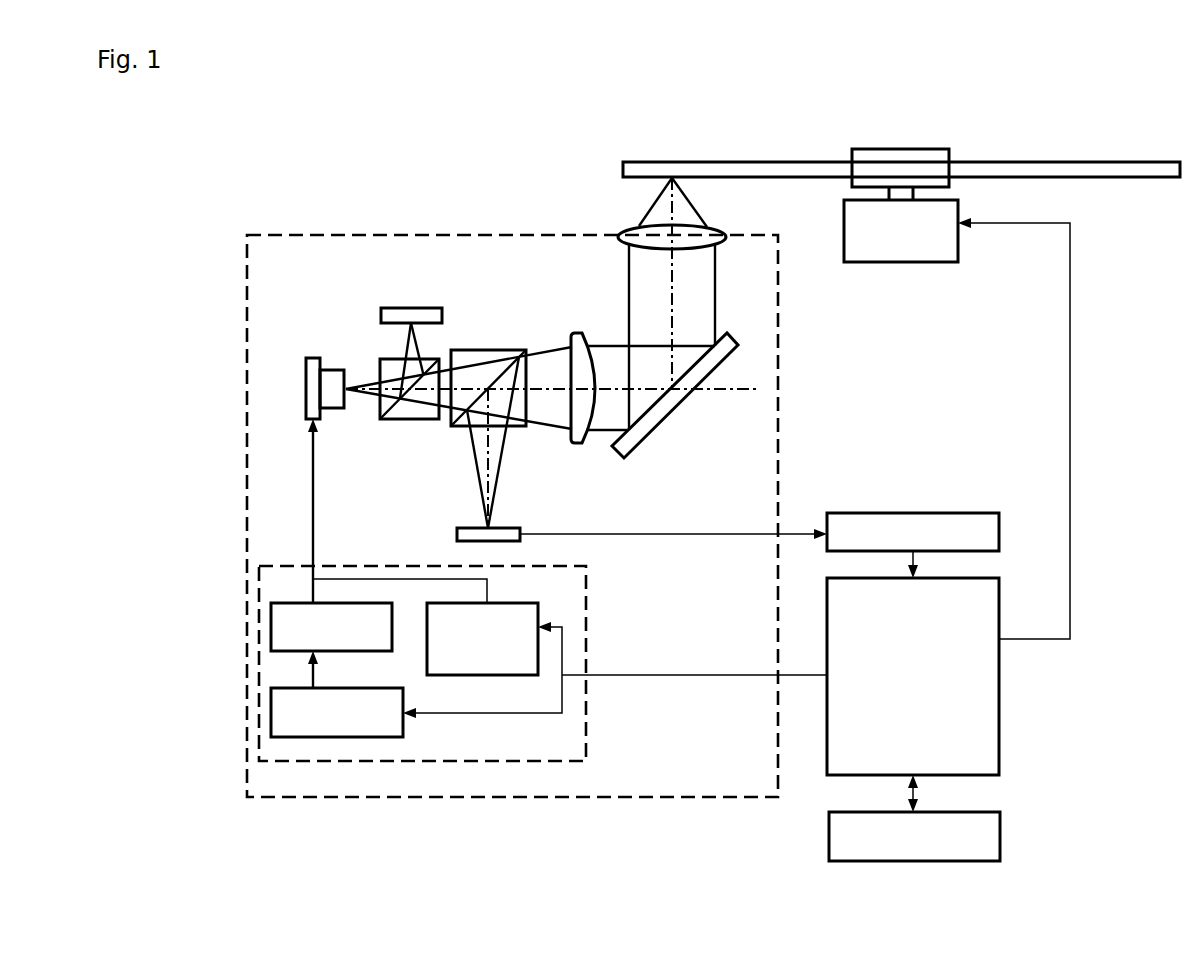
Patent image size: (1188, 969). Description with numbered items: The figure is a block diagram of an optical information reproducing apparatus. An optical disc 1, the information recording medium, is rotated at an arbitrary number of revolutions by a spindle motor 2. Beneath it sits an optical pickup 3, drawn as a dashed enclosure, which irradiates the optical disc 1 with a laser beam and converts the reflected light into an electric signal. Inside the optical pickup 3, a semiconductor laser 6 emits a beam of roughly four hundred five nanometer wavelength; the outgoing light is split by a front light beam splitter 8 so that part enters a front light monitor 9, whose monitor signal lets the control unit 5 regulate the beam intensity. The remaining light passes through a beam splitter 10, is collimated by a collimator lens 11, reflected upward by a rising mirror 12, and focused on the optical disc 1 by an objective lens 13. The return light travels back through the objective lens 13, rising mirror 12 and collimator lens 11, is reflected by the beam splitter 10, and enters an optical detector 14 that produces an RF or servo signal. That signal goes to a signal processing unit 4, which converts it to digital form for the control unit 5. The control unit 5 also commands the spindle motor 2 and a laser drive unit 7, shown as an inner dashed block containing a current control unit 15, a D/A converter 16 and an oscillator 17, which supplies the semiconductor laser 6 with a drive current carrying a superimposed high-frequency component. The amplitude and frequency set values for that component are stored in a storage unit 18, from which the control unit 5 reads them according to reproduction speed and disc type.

The optical disc 1 is at (706, 162).
The spindle motor 2 is at (888, 224).
The optical pickup 3 is at (270, 235).
The signal processing unit 4 is at (1000, 517).
The control unit 5 is at (999, 688).
The semiconductor laser 6 is at (306, 370).
The laser drive unit 7 is at (307, 761).
The front light beam splitter 8 is at (380, 359).
The front light monitor 9 is at (403, 308).
The beam splitter 10 is at (477, 350).
The collimator lens 11 is at (577, 333).
The rising mirror 12 is at (683, 397).
The objective lens 13 is at (623, 227).
The optical detector 14 is at (520, 528).
The current control unit 15 is at (488, 675).
The D/A converter 16 is at (295, 737).
The oscillator 17 is at (271, 627).
The storage unit 18 is at (828, 833).